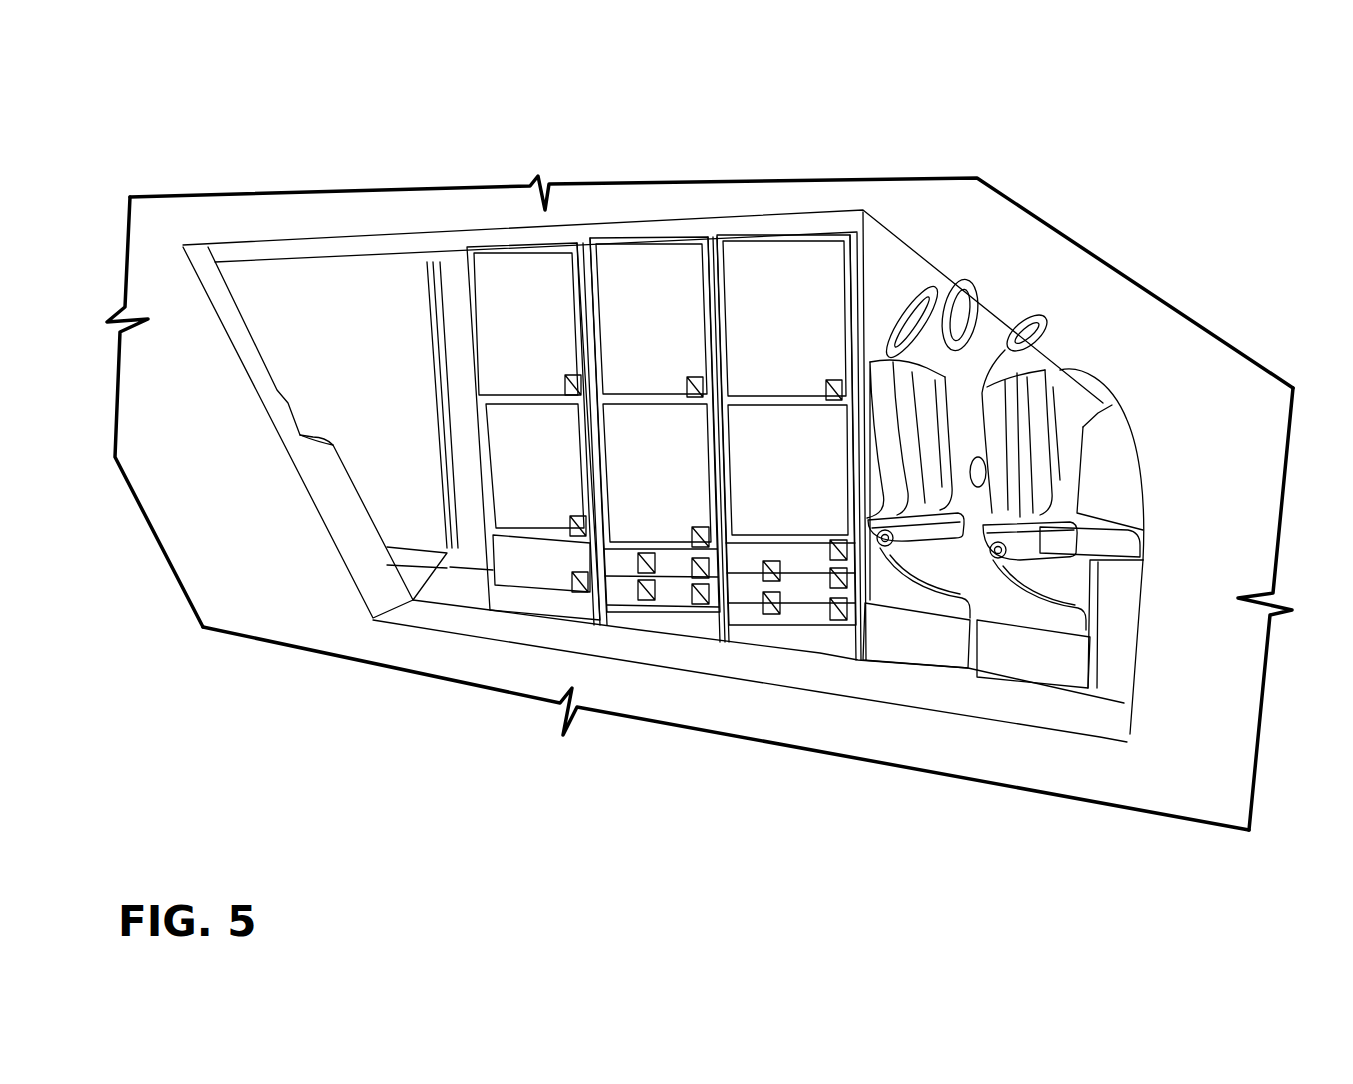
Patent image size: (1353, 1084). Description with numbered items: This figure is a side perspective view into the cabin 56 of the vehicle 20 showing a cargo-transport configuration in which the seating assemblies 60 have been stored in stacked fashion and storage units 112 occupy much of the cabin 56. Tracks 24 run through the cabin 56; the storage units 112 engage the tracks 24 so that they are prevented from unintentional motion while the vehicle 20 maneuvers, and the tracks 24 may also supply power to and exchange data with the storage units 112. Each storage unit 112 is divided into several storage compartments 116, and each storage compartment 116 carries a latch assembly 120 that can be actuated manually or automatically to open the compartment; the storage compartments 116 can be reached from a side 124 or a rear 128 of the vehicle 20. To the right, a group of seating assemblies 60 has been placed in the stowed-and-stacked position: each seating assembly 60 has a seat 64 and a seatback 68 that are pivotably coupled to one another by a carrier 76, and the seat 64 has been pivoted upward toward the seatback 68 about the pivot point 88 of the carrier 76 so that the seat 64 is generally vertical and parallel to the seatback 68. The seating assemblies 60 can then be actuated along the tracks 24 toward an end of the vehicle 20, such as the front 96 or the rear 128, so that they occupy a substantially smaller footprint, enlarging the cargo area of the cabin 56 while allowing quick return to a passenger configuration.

The vehicle 20 is at (208, 146).
The track 24 is at (1112, 674).
The cabin 56 is at (357, 532).
The seating assembly 60 is at (950, 270).
The seat 64 is at (1043, 437).
The seatback 68 is at (913, 280).
The carrier 76 is at (925, 682).
The pivot point 88 is at (887, 550).
The front 96 is at (1282, 469).
The storage unit 112 is at (333, 282).
The storage compartment 116 is at (519, 330).
The latch assembly 120 is at (693, 373).
The side 124 is at (483, 660).
The rear 128 is at (118, 358).